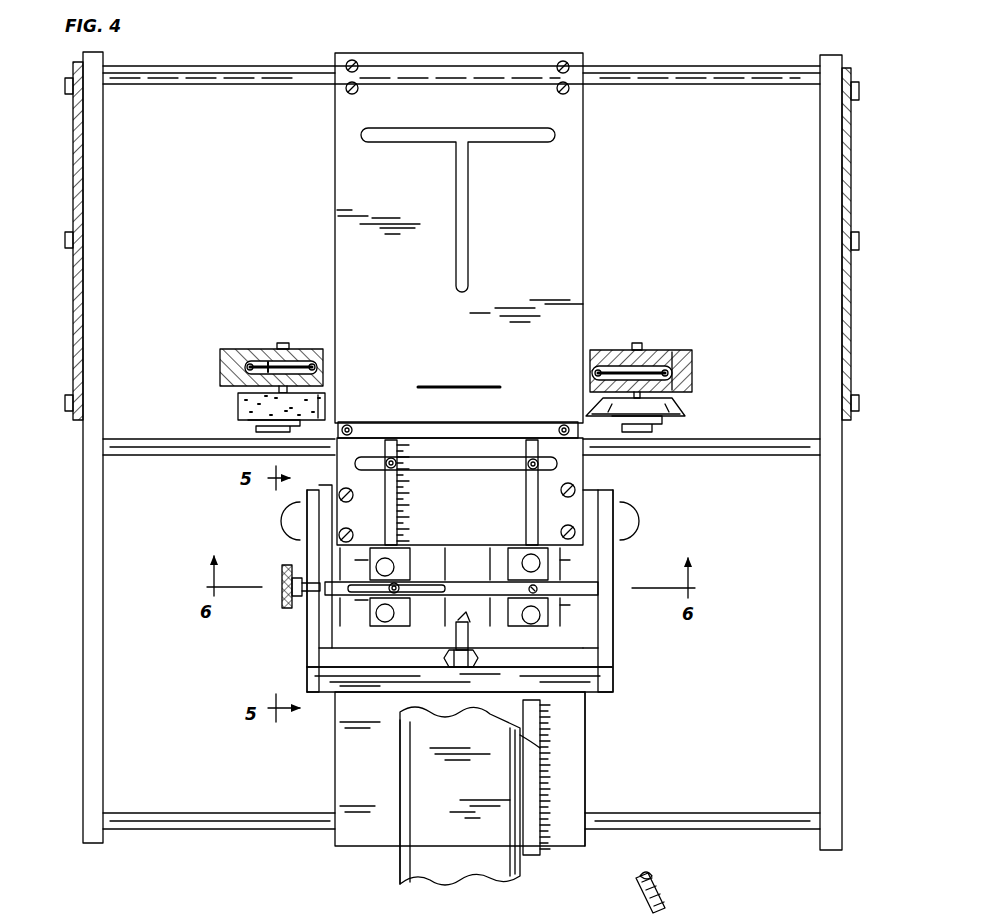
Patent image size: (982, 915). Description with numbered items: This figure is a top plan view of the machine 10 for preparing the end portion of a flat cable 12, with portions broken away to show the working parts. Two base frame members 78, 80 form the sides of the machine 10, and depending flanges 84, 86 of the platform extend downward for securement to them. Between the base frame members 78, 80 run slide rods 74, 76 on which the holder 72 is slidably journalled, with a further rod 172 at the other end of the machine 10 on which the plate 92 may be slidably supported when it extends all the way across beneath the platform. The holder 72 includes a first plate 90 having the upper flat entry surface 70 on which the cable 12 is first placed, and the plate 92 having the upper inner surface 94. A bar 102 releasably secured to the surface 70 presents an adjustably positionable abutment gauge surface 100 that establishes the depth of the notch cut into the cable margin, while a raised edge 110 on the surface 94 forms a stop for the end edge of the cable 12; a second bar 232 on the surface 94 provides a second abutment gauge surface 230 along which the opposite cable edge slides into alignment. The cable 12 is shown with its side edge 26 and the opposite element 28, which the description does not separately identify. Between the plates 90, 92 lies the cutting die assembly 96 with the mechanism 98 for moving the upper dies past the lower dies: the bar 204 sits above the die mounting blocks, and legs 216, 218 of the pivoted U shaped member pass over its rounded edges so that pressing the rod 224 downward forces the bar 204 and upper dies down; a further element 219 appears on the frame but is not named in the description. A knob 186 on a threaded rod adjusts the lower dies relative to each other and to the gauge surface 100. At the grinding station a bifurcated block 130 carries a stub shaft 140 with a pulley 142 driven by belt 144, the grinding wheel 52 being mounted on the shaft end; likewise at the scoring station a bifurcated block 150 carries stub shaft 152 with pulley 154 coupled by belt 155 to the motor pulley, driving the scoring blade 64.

The machine 10 is at (516, 34).
The flat cable 12 is at (478, 880).
The side edge 26 is at (400, 860).
The right guide rail 28 is at (520, 862).
The grinding wheel 52 is at (242, 402).
The scoring blade 64 is at (682, 410).
The upper flat surface 70 is at (460, 769).
The holder 72 is at (580, 470).
The rod 74 is at (236, 829).
The rod 76 is at (186, 452).
The base frame member 78 is at (90, 133).
The base frame member 80 is at (838, 66).
The depending flange 84 is at (76, 186).
The depending flange 86 is at (850, 318).
The first plate portion 90 is at (575, 806).
The plate 92 is at (580, 280).
The upper surface 94 is at (460, 491).
The cutting die assembly 96 is at (352, 622).
The mechanism 98 is at (615, 652).
The abutment gauge surface 100 is at (528, 750).
The bar 102 is at (540, 796).
The raised edge 110 is at (485, 387).
The block 130 is at (232, 350).
The stub shaft 140 is at (284, 345).
The pulley 142 is at (268, 362).
The belt 144 is at (318, 368).
The block 150 is at (692, 378).
The stub shaft 152 is at (637, 343).
The pulley 154 is at (620, 368).
The belt 155 is at (682, 372).
The rod 172 is at (262, 70).
The knob 186 is at (290, 608).
The bar 204 is at (576, 588).
The leg 216 is at (312, 634).
The leg 218 is at (606, 620).
The bottom frame member 219 is at (600, 668).
The rod 224 is at (662, 882).
The second abutment gauge surface 230 is at (390, 506).
The bar 232 is at (390, 478).